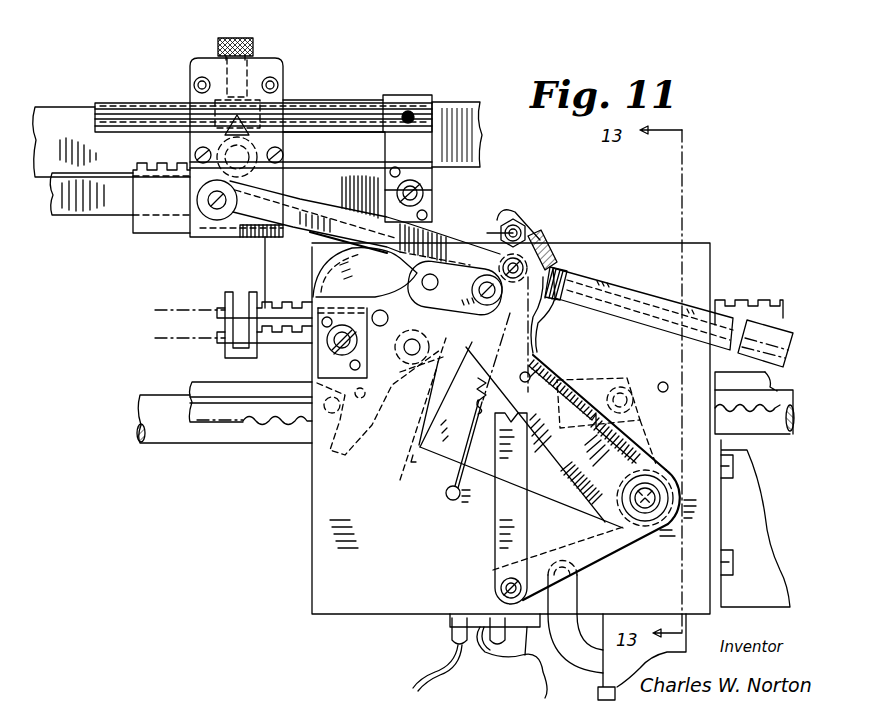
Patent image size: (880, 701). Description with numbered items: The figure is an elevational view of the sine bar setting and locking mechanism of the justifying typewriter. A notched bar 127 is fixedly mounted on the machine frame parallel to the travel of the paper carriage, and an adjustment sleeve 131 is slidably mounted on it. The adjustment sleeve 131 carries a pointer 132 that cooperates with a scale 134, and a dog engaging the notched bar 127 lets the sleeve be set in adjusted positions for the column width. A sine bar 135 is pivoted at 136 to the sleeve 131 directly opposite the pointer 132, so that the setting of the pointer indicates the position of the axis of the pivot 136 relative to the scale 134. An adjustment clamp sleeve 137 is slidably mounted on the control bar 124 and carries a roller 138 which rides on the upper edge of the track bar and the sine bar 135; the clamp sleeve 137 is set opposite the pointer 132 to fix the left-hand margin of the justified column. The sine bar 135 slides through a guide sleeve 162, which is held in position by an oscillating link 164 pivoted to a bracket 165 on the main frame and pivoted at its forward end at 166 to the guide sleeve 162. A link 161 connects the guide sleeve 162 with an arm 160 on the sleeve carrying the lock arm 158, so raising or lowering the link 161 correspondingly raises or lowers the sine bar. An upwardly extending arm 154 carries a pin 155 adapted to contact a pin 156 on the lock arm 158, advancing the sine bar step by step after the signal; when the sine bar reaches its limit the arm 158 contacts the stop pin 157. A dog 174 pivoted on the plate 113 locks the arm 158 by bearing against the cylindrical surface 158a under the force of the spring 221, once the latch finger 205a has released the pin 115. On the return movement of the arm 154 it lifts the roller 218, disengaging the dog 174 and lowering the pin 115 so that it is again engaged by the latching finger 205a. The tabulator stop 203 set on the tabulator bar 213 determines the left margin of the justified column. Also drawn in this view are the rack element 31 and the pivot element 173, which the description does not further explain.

The scale 134 is at (118, 105).
The adjustment sleeve 131 is at (190, 142).
The adjustment clamp sleeve 137 is at (253, 80).
The pointer 132 is at (290, 99).
The roller 138 is at (292, 147).
The control bar 124 is at (455, 102).
The bracket 165 is at (430, 188).
The notched bar 127 is at (137, 218).
The pivot 136 is at (197, 243).
The oscillating link 164 is at (452, 243).
The dog 174 is at (473, 262).
The pivot 166 is at (523, 231).
The roller 218 is at (556, 263).
The guide sleeve 162 is at (543, 240).
The sine bar 135 is at (687, 304).
The tabulator bar 213 is at (162, 358).
The tabulator stop 203 is at (230, 292).
The rack 31 is at (270, 423).
The plate 113 is at (325, 580).
The latch finger 205a is at (420, 263).
The pivot screw 173 is at (482, 297).
The pin 115 is at (426, 290).
The cylindrical surface 158a is at (438, 393).
The spring 221 is at (478, 392).
The lock arm 158 is at (437, 452).
The pin 156 is at (538, 355).
The pin 155 is at (550, 367).
The stop pin 157 is at (661, 382).
The arm 154 is at (620, 457).
The link 161 is at (507, 520).
The arm 160 is at (590, 560).